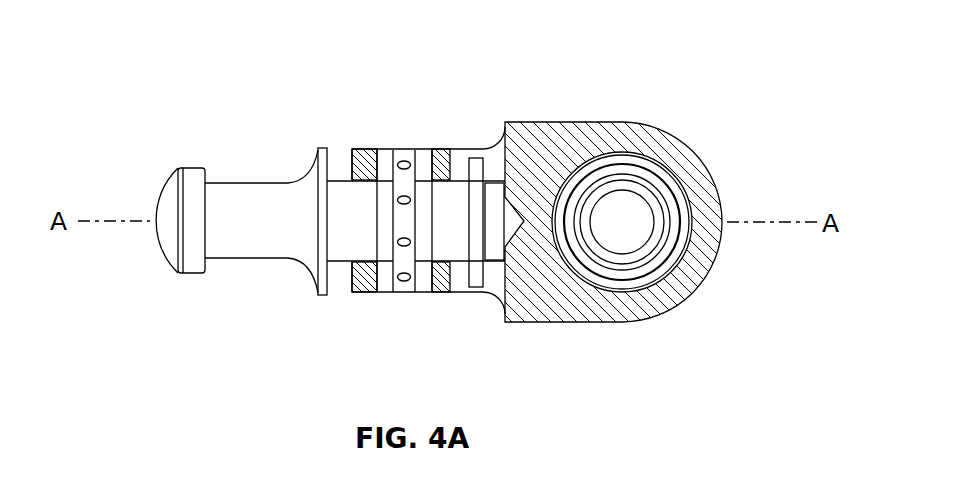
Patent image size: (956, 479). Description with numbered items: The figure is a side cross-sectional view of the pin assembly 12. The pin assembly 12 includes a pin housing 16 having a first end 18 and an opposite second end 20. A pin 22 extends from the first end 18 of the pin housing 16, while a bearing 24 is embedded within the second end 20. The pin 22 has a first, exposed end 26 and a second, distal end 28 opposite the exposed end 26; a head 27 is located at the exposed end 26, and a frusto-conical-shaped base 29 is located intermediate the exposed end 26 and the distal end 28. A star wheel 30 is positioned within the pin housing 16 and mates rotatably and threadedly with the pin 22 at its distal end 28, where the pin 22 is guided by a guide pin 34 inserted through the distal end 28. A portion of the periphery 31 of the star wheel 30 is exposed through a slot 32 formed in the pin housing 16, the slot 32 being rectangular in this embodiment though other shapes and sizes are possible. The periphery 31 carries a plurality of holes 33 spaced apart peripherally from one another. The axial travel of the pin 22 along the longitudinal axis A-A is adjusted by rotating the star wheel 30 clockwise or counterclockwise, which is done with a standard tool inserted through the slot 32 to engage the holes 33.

The pin assembly 12 is at (131, 35).
The pin housing 16 is at (462, 134).
The first end 18 is at (398, 217).
The second end 20 is at (722, 233).
The pin 22 is at (238, 269).
The bearing 24 is at (632, 170).
The exposed end 26 is at (155, 215).
The head 27 is at (190, 250).
The distal end 28 is at (487, 215).
The frusto-conical-shaped base 29 is at (303, 196).
The star wheel 30 is at (368, 276).
The periphery 31 is at (405, 228).
The slot 32 is at (389, 197).
The holes 33 is at (403, 282).
The guide pin 34 is at (475, 299).